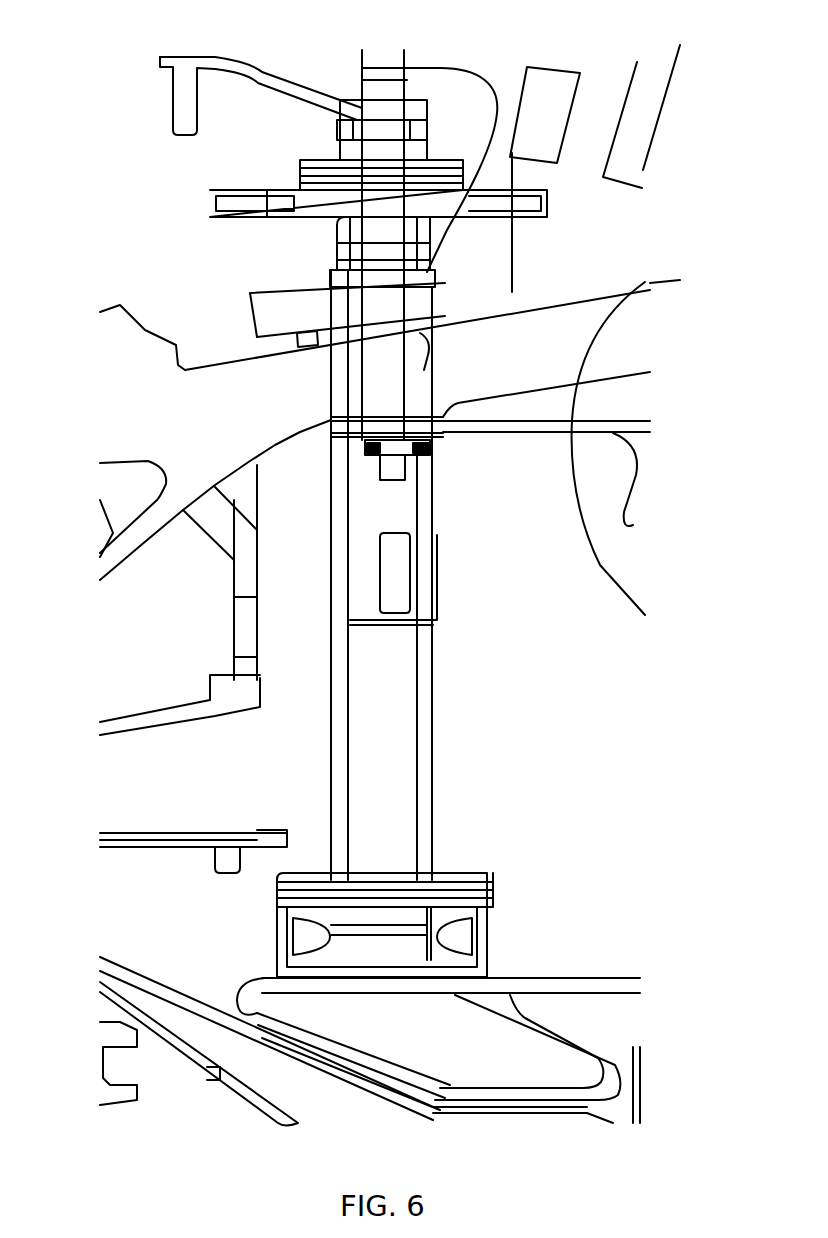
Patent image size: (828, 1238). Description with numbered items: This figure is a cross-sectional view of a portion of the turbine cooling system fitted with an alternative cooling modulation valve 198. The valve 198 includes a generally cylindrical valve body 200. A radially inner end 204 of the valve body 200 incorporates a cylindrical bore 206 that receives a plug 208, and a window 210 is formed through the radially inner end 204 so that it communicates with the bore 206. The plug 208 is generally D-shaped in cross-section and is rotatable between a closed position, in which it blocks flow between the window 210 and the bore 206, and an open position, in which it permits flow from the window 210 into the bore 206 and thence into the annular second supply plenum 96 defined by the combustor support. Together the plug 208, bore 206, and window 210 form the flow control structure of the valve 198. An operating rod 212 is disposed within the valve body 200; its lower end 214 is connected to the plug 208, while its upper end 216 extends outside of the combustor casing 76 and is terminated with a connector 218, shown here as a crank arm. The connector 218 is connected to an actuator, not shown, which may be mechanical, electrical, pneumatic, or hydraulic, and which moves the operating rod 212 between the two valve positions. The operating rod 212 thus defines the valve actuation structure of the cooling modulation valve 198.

The connector 218 is at (267, 77).
The upper end 216 is at (395, 153).
The operating rod 212 is at (380, 383).
The combustor casing 76 is at (580, 307).
The lower end 214 is at (363, 485).
The plug 208 is at (417, 570).
The window 210 is at (430, 613).
The valve body 200 is at (423, 842).
The cylindrical bore 206 is at (417, 752).
The cooling modulation valve 198 is at (297, 755).
The radially inner end 204 is at (423, 917).
The second supply plenum 96 is at (481, 1043).